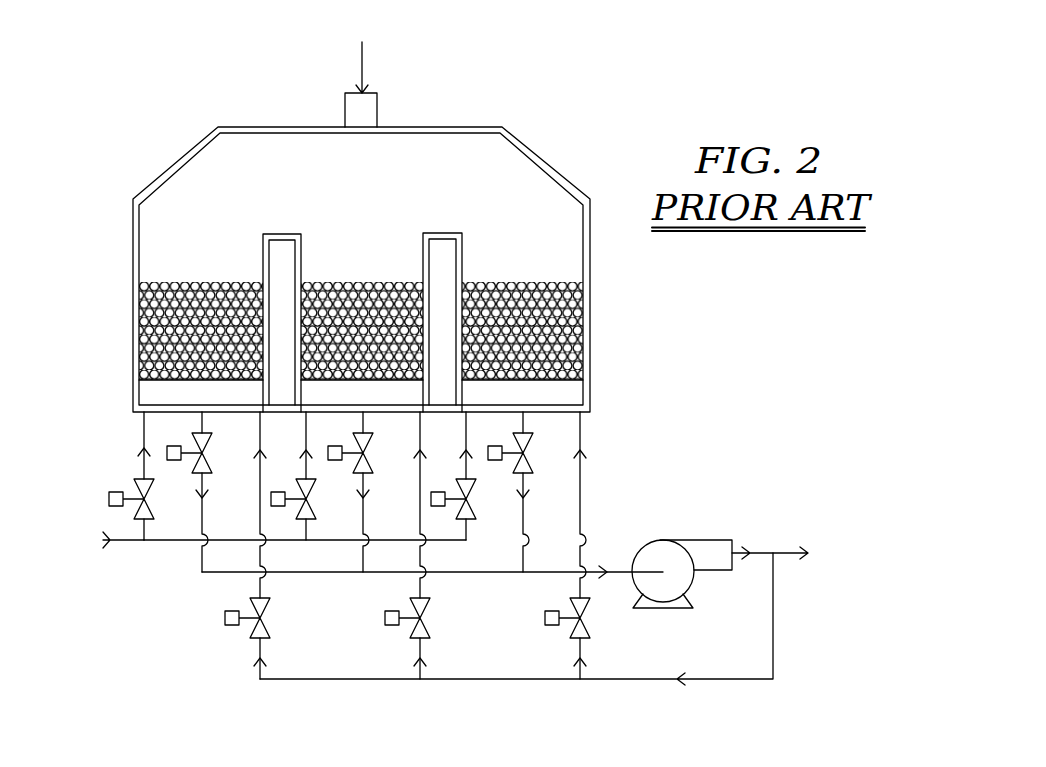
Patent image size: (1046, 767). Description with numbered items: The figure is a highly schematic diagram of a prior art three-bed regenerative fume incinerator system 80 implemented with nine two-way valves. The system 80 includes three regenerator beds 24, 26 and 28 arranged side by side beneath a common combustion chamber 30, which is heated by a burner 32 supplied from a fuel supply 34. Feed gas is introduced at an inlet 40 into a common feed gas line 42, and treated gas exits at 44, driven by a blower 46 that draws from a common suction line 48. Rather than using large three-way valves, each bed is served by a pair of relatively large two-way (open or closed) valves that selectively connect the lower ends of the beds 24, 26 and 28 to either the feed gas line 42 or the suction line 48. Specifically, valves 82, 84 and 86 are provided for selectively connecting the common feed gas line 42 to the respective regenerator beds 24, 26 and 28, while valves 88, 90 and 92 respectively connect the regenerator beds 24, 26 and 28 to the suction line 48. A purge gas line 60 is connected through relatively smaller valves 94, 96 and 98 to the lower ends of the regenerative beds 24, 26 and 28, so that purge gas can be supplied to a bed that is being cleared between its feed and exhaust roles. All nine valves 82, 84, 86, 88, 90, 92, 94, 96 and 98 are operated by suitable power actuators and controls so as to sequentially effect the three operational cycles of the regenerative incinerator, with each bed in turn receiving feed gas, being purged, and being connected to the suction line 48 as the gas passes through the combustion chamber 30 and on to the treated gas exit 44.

The regenerator bed 24 is at (195, 345).
The regenerator bed 26 is at (378, 285).
The regenerator bed 28 is at (567, 335).
The common combustion chamber 30 is at (445, 177).
The burner 32 is at (378, 108).
The fuel supply 34 is at (361, 62).
The inlet 40 is at (106, 543).
The common feed gas line 42 is at (178, 543).
The treated gas exit 44 is at (805, 557).
The blower 46 is at (678, 540).
The common suction line 48 is at (472, 573).
The purge gas line 60 is at (485, 680).
The system 80 is at (750, 365).
The valve 82 is at (134, 482).
The valve 84 is at (309, 503).
The valve 86 is at (473, 512).
The valve 88 is at (208, 463).
The valve 90 is at (370, 447).
The valve 92 is at (528, 466).
The purge gas valve 94 is at (270, 632).
The purge gas valve 96 is at (412, 633).
The purge gas valve 98 is at (590, 625).